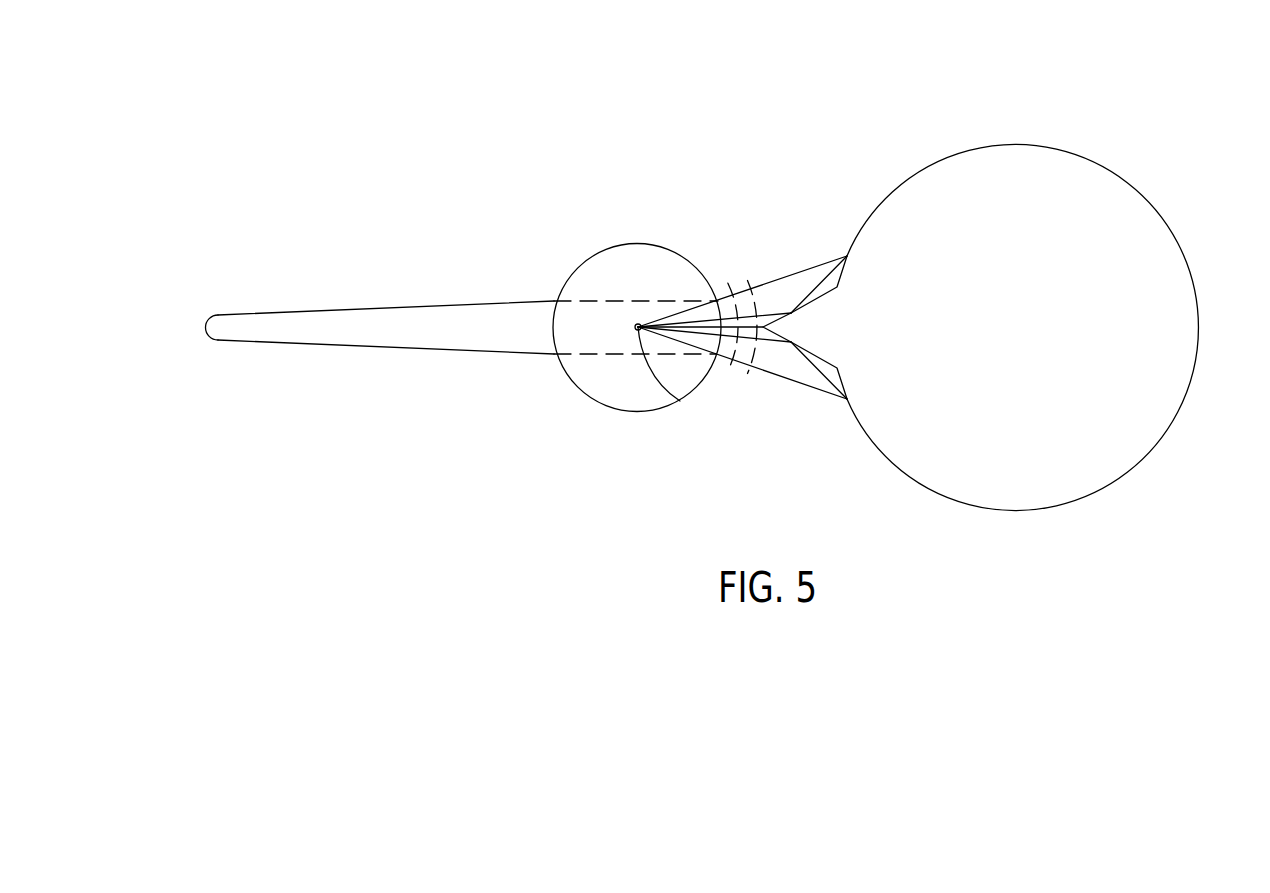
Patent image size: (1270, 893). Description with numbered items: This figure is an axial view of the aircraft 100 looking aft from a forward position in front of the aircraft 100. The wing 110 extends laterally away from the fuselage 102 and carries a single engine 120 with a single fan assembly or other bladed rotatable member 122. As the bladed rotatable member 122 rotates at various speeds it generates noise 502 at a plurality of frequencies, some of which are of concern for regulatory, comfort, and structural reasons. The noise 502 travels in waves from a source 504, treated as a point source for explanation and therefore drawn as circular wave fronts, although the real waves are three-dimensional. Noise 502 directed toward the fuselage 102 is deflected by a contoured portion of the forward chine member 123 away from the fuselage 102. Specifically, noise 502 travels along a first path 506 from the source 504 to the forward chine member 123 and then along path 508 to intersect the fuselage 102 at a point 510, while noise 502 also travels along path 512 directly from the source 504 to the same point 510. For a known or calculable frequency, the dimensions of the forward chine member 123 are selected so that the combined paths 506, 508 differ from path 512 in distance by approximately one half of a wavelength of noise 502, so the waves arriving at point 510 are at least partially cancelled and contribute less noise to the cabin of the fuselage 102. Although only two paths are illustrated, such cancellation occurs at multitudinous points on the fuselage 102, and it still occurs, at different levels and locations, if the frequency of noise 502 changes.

The aircraft 100 is at (1061, 71).
The fuselage 102 is at (1098, 188).
The wing 110 is at (510, 318).
The engine 120 is at (615, 408).
The bladed rotatable member 122 is at (632, 255).
The forward chine member 123 is at (823, 347).
The noise 502 is at (739, 284).
The source 504 is at (680, 401).
The first path 506 is at (783, 318).
The path 508 is at (840, 284).
The point 510 is at (847, 256).
The path 512 is at (808, 262).